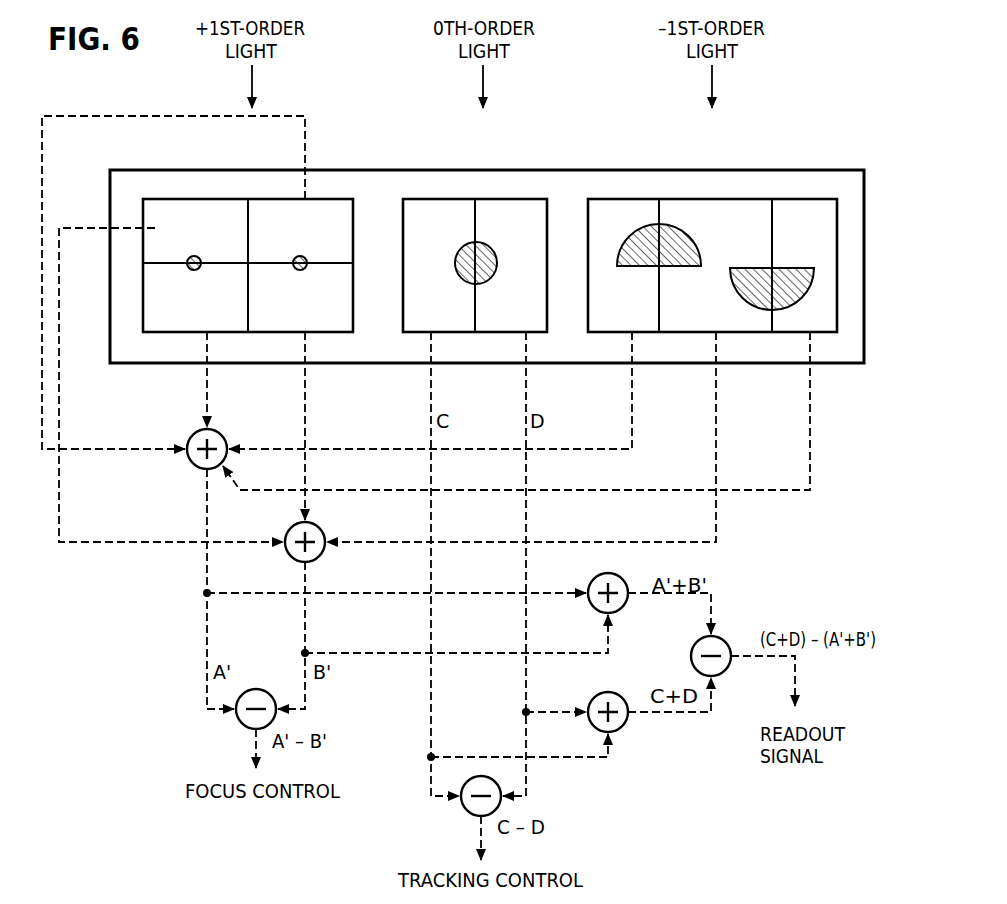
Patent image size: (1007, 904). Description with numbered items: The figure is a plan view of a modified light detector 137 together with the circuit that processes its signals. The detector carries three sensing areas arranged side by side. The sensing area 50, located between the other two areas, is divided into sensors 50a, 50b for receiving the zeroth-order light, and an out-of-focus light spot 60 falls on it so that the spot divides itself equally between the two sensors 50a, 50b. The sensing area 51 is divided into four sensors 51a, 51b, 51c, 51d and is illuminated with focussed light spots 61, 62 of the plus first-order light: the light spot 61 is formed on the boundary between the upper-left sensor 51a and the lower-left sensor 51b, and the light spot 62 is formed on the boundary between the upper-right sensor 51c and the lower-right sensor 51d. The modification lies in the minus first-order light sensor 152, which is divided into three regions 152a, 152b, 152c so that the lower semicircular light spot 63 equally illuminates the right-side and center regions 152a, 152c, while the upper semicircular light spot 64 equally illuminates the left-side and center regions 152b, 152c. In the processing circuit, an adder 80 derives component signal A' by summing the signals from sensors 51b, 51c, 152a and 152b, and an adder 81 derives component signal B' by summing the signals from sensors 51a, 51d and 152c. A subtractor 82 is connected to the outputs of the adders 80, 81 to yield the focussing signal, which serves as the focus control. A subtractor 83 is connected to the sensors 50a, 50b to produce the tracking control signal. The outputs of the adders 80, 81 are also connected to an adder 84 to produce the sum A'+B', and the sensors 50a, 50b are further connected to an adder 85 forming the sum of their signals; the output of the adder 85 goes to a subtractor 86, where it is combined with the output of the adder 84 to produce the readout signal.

The modified light detector 137 is at (832, 173).
The sensing area 51 is at (226, 192).
The upper-left sensor 51a is at (153, 205).
The lower-left sensor 51b is at (172, 322).
The upper-right sensor 51c is at (332, 205).
The lower-right sensor 51d is at (313, 322).
The light spot 61 is at (193, 256).
The light spot 62 is at (301, 256).
The sensing area 50 is at (476, 192).
The sensor 50a is at (415, 325).
The sensor 50b is at (516, 325).
The out-of-focus light spot 60 is at (457, 266).
The minus first-order light sensor 152 is at (714, 192).
The right-side region 152a is at (785, 325).
The left-side region 152b is at (610, 325).
The center region 152c is at (698, 325).
The lower semicircular light spot 63 is at (752, 267).
The upper semicircular light spot 64 is at (629, 268).
The adder 80 is at (219, 436).
The adder 81 is at (322, 535).
The subtractor 82 is at (258, 693).
The subtractor 83 is at (467, 812).
The adder 84 is at (596, 610).
The adder 85 is at (612, 696).
The subtractor 86 is at (724, 644).